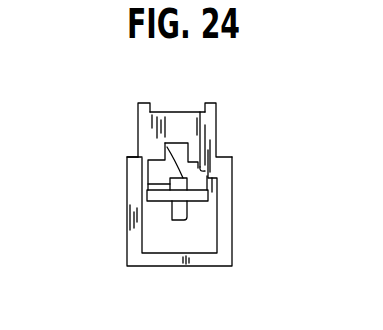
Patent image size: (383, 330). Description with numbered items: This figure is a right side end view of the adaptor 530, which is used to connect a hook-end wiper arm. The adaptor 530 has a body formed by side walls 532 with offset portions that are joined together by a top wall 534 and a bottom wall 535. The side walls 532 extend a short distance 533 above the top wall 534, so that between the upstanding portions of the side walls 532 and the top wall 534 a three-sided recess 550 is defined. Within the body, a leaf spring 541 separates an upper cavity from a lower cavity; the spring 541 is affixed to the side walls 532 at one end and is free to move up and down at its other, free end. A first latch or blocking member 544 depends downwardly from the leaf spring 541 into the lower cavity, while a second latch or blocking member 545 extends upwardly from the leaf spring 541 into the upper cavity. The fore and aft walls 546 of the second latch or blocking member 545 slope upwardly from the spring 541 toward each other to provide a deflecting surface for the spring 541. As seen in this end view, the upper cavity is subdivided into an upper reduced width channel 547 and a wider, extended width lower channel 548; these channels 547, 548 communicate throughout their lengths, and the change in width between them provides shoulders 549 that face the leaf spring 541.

The adaptor 530 is at (120, 248).
The side walls 532 is at (232, 183).
The short distance 533 is at (137, 108).
The top wall 534 is at (203, 125).
The bottom wall 535 is at (205, 267).
The leaf spring 541 is at (200, 195).
The first latch or blocking member 544 is at (187, 220).
The second latch or blocking member 545 is at (147, 184).
The fore and aft walls 546 is at (164, 148).
The upper reduced width channel 547 is at (165, 143).
The extended width lower channel 548 is at (140, 170).
The shoulders 549 is at (205, 171).
The three-sided recess 550 is at (178, 110).